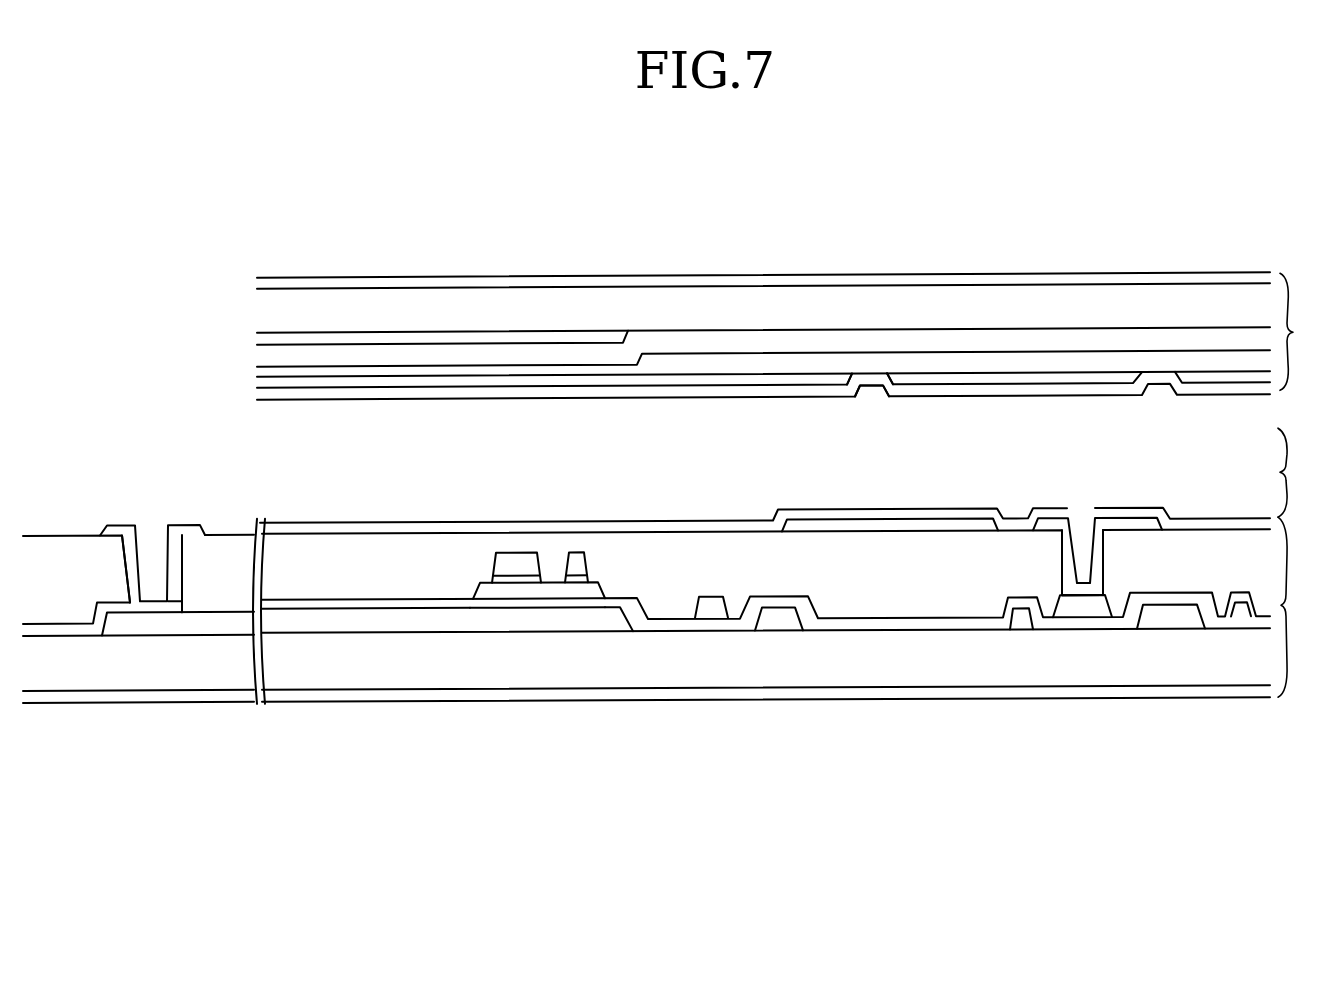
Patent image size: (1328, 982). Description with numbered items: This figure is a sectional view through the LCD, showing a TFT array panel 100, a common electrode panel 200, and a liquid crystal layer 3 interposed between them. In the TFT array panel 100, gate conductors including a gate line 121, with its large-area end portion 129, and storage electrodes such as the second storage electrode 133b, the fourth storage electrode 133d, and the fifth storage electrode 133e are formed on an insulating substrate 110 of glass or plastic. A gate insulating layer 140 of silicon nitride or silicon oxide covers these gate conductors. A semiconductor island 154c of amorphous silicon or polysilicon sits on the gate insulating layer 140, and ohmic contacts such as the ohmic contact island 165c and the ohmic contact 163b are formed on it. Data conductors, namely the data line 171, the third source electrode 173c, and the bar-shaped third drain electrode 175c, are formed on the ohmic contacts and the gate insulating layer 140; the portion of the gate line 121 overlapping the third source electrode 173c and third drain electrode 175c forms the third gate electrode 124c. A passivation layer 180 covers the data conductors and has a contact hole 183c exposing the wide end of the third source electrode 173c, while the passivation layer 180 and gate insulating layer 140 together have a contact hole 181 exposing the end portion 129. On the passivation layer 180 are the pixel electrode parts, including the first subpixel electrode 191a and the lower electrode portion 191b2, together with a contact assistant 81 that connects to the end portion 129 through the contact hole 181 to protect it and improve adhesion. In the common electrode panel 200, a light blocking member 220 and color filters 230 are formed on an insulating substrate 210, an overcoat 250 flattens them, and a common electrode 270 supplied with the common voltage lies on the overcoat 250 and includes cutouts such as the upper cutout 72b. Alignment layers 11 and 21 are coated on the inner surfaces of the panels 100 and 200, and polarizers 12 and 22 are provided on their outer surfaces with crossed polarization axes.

The polarizer 22 is at (380, 285).
The insulating substrate 210 is at (452, 302).
The light blocking member 220 is at (513, 338).
The color filter 230 is at (725, 339).
The overcoat 250 is at (672, 369).
The common electrode 270 is at (795, 381).
The upper cutout 72b is at (875, 385).
The alignment layer 21 is at (1033, 393).
The common electrode panel 200 is at (1304, 331).
The liquid crystal layer 3 is at (1294, 472).
The TFT array panel 100 is at (1303, 607).
The alignment layer 11 is at (713, 526).
The passivation layer 180 is at (63, 557).
The contact hole 181 is at (130, 566).
The contact assistant 81 is at (190, 531).
The end portion of gate line 129 is at (137, 629).
The gate insulating layer 140 is at (63, 630).
The insulating substrate 110 is at (190, 679).
The polarizer 12 is at (230, 696).
The gate line 121 is at (348, 629).
The third gate electrode 124c is at (582, 628).
The semiconductor island 154c is at (533, 597).
The third drain electrode 175c is at (440, 615).
The ohmic contact island 165c is at (508, 575).
The ohmic contact 163b is at (573, 580).
The third source electrode 173c is at (580, 563).
The fifth storage electrode 133e is at (777, 627).
The fourth storage electrode 133d is at (1020, 628).
The second storage electrode 133b is at (1167, 625).
The data line 171 is at (1243, 616).
The lower electrode portion 191b2 is at (815, 531).
The first subpixel electrode 191a is at (1122, 528).
The contact hole 183c is at (1067, 550).